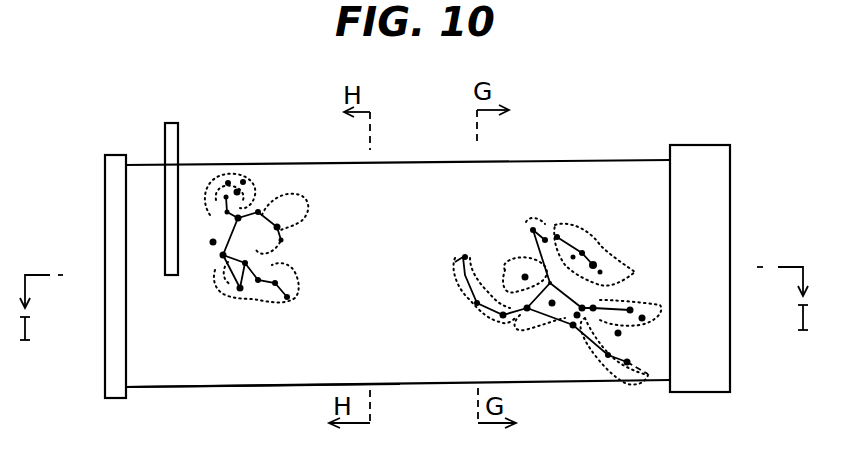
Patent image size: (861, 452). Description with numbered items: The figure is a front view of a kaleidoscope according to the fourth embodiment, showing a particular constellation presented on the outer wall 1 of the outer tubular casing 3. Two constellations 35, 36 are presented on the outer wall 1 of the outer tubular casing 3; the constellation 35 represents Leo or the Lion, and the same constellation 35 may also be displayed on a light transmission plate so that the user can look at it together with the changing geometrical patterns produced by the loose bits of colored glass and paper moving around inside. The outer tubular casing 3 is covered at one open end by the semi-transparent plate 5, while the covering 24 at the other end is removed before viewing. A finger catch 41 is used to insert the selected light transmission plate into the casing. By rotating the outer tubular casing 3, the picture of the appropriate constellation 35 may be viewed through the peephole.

The outer wall 1 is at (403, 185).
The outer tubular casing 3 is at (245, 393).
The semi-transparent plate 5 is at (115, 340).
The covering 24 is at (713, 242).
The constellation 35 is at (245, 205).
The constellation 36 is at (550, 245).
The finger catch 41 is at (168, 142).